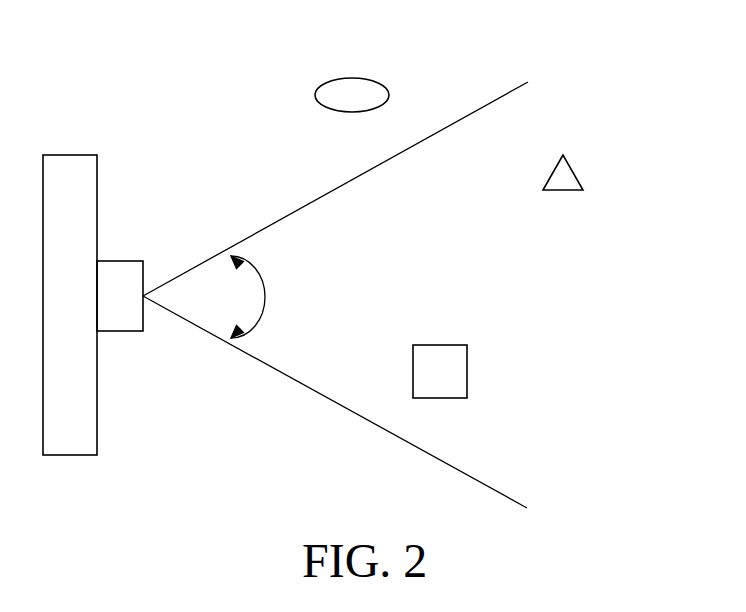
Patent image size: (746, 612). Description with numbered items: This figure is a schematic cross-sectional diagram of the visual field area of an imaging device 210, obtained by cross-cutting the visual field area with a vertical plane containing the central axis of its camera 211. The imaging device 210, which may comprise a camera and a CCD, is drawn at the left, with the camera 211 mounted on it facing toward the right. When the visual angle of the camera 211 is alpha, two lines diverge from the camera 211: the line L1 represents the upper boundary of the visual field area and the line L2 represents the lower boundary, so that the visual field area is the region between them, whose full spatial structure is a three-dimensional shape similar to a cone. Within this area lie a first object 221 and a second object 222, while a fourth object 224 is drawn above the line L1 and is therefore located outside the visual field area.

The imaging device 210 is at (80, 168).
The camera 211 is at (118, 332).
The first object 221 is at (562, 178).
The second object 222 is at (438, 372).
The fourth object 224 is at (340, 88).
The upper boundary of the visual field area L1 is at (335, 184).
The lower boundary of the visual field area L2 is at (335, 411).